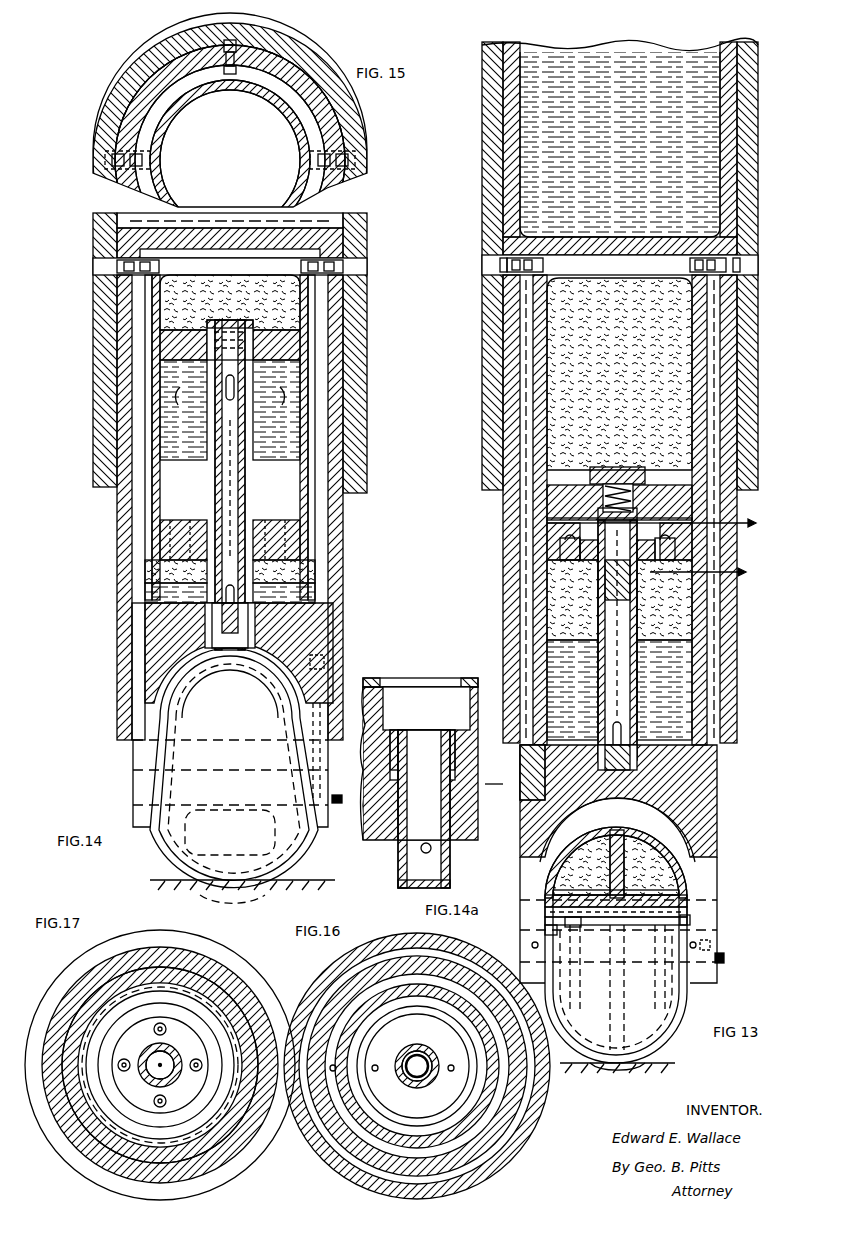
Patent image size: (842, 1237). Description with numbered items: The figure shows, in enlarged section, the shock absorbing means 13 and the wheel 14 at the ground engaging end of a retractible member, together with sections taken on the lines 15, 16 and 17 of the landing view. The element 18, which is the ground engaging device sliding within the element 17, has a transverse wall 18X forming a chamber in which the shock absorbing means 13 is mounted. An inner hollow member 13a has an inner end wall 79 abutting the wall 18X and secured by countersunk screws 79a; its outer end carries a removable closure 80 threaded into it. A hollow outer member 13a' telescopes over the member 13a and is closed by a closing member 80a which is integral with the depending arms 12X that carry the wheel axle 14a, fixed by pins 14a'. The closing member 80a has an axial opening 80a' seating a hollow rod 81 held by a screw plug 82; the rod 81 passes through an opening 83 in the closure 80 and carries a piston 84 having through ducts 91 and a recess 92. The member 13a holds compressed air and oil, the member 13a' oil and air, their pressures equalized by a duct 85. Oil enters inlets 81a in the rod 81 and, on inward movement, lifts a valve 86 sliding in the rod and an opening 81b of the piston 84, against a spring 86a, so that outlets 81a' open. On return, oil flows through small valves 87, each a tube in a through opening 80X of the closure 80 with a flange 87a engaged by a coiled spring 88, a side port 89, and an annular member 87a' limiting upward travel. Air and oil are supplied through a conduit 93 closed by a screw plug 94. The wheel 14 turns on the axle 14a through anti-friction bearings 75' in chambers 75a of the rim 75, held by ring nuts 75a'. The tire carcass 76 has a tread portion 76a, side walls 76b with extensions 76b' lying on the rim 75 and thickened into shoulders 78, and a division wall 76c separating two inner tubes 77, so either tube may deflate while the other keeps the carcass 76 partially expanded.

In FIG. 13, the depending arms 12X is at (714, 896).
In FIG. 13, the shock-absorbing means 13 is at (494, 776).
In FIG. 15, the inner hollow member 13a is at (230, 160).
In FIG. 14, the inner hollow member 13a is at (361, 507).
In FIG. 13, the inner hollow member 13a is at (652, 509).
In FIG. 17, the inner hollow member 13a is at (193, 1051).
In FIG. 16, the inner hollow member 13a is at (427, 1049).
In FIG. 14, the hollow outer member 13a' is at (227, 507).
In FIG. 13, the hollow outer member 13a' is at (666, 517).
In FIG. 17, the hollow outer member 13a' is at (143, 1076).
In FIG. 16, the hollow outer member 13a' is at (451, 1080).
In FIG. 14, the wheel 14 is at (313, 857).
In FIG. 13, the wheel 14 is at (665, 1044).
In FIG. 13, the wheel axle 14a is at (716, 754).
In FIG. 13, the pins 14a' is at (724, 935).
In FIG. 14, the section line 15 is at (385, 272).
In FIG. 14, the section line 16 is at (385, 373).
In FIG. 15, the element 17 is at (357, 122).
In FIG. 14, the element 17 is at (385, 568).
In FIG. 13, the element 17 is at (757, 352).
In FIG. 17, the element 17 is at (73, 966).
In FIG. 16, the element 17 is at (360, 1181).
In FIG. 15, the element 18 is at (119, 108).
In FIG. 13, the element 18 is at (731, 154).
In FIG. 17, the element 18 is at (211, 971).
In FIG. 16, the element 18 is at (331, 1136).
In FIG. 13, the transverse wall 18X is at (701, 236).
In FIG. 13, the rim 75 is at (650, 869).
In FIG. 13, the anti-friction bearings 75' is at (568, 934).
In FIG. 13, the chambers 75a is at (521, 937).
In FIG. 13, the ring nuts 75a' is at (735, 916).
In FIG. 13, the carcass 76 is at (681, 873).
In FIG. 13, the tread portion 76a is at (607, 1066).
In FIG. 13, the side walls 76b is at (634, 981).
In FIG. 13, the extensions 76b' is at (583, 864).
In FIG. 13, the division wall 76c is at (668, 853).
In FIG. 13, the inner tubes 77 is at (684, 881).
In FIG. 13, the circumferential shoulders 78 is at (553, 898).
In FIG. 13, the inner end wall 79 is at (706, 253).
In FIG. 15, the countersunk screws 79a is at (363, 162).
In FIG. 13, the countersunk screws 79a is at (741, 269).
In FIG. 14, the removable closure 80 is at (239, 653).
In FIG. 14A, the removable closure 80 is at (470, 806).
In FIG. 13, the removable closure 80 is at (718, 543).
In FIG. 14A, the through opening 80X is at (396, 836).
In FIG. 13, the closing member 80a is at (660, 801).
In FIG. 13, the axially disposed opening 80a' is at (662, 772).
In FIG. 14, the hollow rod 81 is at (248, 497).
In FIG. 13, the hollow rod 81 is at (644, 703).
In FIG. 17, the hollow rod 81 is at (172, 1075).
In FIG. 16, the hollow rod 81 is at (430, 1081).
In FIG. 13, the inlets 81a is at (707, 723).
In FIG. 17, the inlets 81a is at (151, 1059).
In FIG. 13, the outlets 81a' is at (705, 603).
In FIG. 13, the opening 81b is at (684, 508).
In FIG. 16, the opening 81b is at (414, 1050).
In FIG. 13, the screw plug 82 is at (714, 836).
In FIG. 13, the axially disposed opening 83 is at (634, 468).
In FIG. 13, the piston 84 is at (684, 484).
In FIG. 13, the duct 85 is at (546, 411).
In FIG. 16, the duct 85 is at (337, 1068).
In FIG. 13, the valve 86 is at (598, 604).
In FIG. 13, the spring 86a is at (547, 506).
In FIG. 14A, the valves 87 is at (450, 856).
In FIG. 13, the valves 87 is at (579, 549).
In FIG. 17, the valves 87 is at (195, 1062).
In FIG. 14A, the flange 87a is at (422, 736).
In FIG. 14A, the annular member 87a' is at (420, 672).
In FIG. 14A, the coiled spring 88 is at (420, 760).
In FIG. 14A, the port 89 is at (421, 852).
In FIG. 14, the through ducts 91 is at (293, 328).
In FIG. 16, the through ducts 91 is at (452, 1066).
In FIG. 13, the recess 92 is at (556, 529).
In FIG. 14, the conduit 93 is at (330, 664).
In FIG. 13, the conduit 93 is at (706, 948).
In FIG. 14, the screw plug 94 is at (336, 795).
In FIG. 13, the screw plug 94 is at (725, 959).